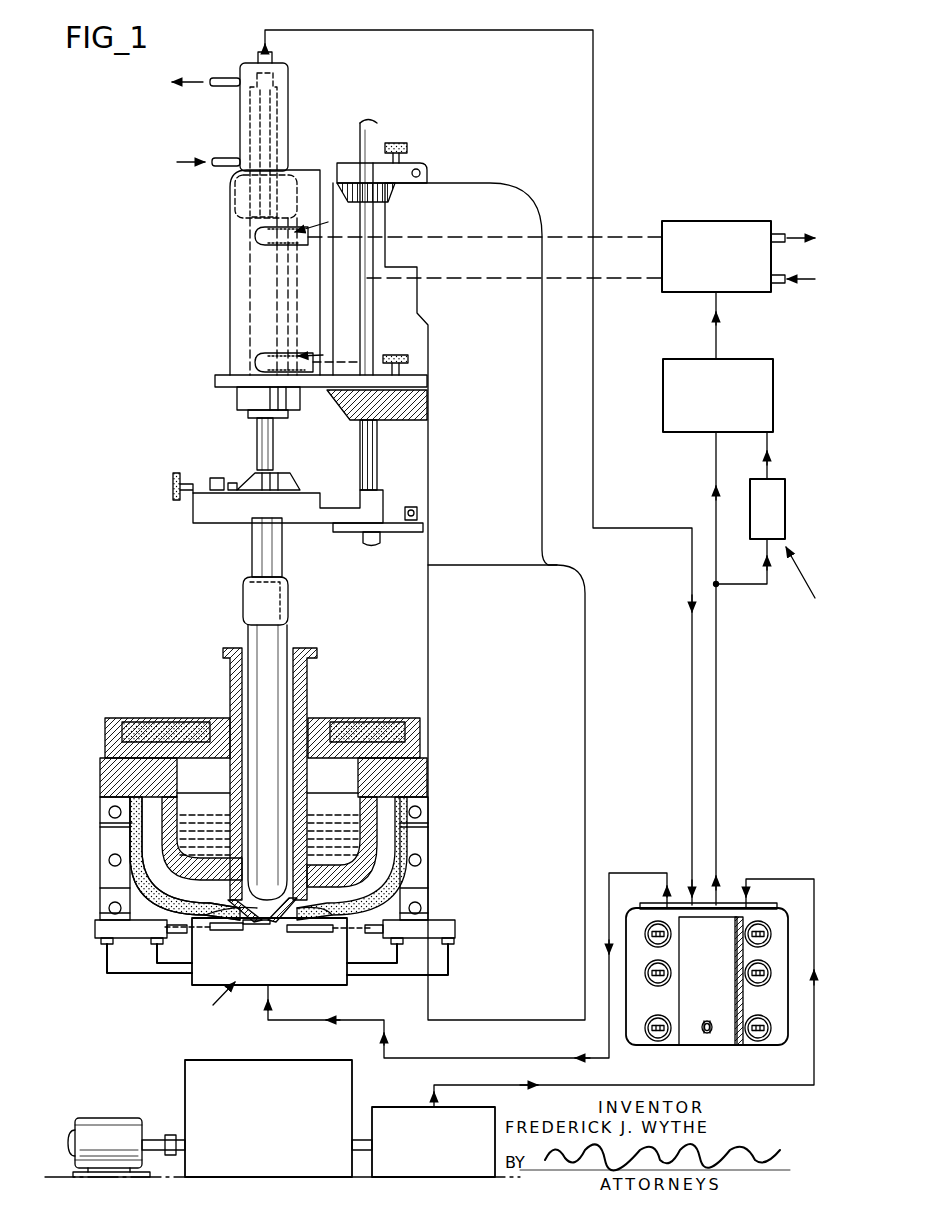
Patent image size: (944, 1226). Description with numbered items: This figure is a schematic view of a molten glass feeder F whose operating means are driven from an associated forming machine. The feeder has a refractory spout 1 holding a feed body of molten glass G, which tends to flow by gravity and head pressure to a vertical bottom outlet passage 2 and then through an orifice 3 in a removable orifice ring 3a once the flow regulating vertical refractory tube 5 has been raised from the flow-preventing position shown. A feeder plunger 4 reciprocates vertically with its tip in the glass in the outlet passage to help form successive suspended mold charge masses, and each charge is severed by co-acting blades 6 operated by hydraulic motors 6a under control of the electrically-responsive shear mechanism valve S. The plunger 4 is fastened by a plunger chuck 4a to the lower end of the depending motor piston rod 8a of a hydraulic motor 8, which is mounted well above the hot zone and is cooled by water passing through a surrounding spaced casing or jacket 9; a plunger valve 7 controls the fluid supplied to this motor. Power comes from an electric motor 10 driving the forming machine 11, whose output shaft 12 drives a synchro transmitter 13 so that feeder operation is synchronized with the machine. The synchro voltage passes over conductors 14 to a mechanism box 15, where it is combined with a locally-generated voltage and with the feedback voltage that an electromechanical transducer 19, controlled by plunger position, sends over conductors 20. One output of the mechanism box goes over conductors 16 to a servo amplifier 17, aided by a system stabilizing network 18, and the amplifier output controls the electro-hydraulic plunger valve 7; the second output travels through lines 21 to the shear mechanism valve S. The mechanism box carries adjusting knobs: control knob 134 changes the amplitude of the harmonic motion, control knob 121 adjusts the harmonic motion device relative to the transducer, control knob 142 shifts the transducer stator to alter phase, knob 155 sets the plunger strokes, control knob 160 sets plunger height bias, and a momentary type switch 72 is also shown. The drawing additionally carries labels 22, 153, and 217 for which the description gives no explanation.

The refractory spout 1 is at (165, 824).
The vertical bottom outlet passage 2 is at (205, 906).
The orifice 3 is at (266, 922).
The removable orifice ring 3a is at (222, 926).
The feeder plunger 4 is at (262, 677).
The plunger chuck 4a is at (252, 548).
The flow regulating vertical refractory tube 5 is at (308, 676).
The co-acting blades 6 is at (238, 935).
The hydraulic motors 6a is at (95, 932).
The plunger valve 7 is at (700, 226).
The hydraulic motor 8 is at (255, 284).
The motor piston rod 8a is at (276, 444).
The casing or jacket 9 is at (288, 106).
The electric motor 10 is at (97, 1120).
The forming machine 11 is at (236, 1042).
The output shaft 12 is at (362, 1140).
The synchro transmitter 13 is at (402, 1110).
The conductors 14 is at (688, 1085).
The mechanism box 15 is at (718, 974).
The conductors 16 is at (720, 719).
The servo amplifier 17 is at (750, 365).
The system stabilizing network 18 is at (772, 494).
The electromechanical transducer 19 is at (272, 86).
The conductors 20 is at (596, 117).
The lines 21 is at (612, 873).
The cylinder head 22 is at (240, 122).
The momentary type switch 72 is at (716, 1002).
The control knob 121 is at (645, 970).
The control knob 134 is at (645, 932).
The control knob 142 is at (658, 1040).
The control knob 153 is at (760, 985).
The knob 155 is at (762, 922).
The control knob 160 is at (758, 1040).
The control line 217 is at (520, 1066).
The molten glass feeder F is at (150, 690).
The molten glass G is at (324, 812).
The shear mechanism valve S is at (187, 990).